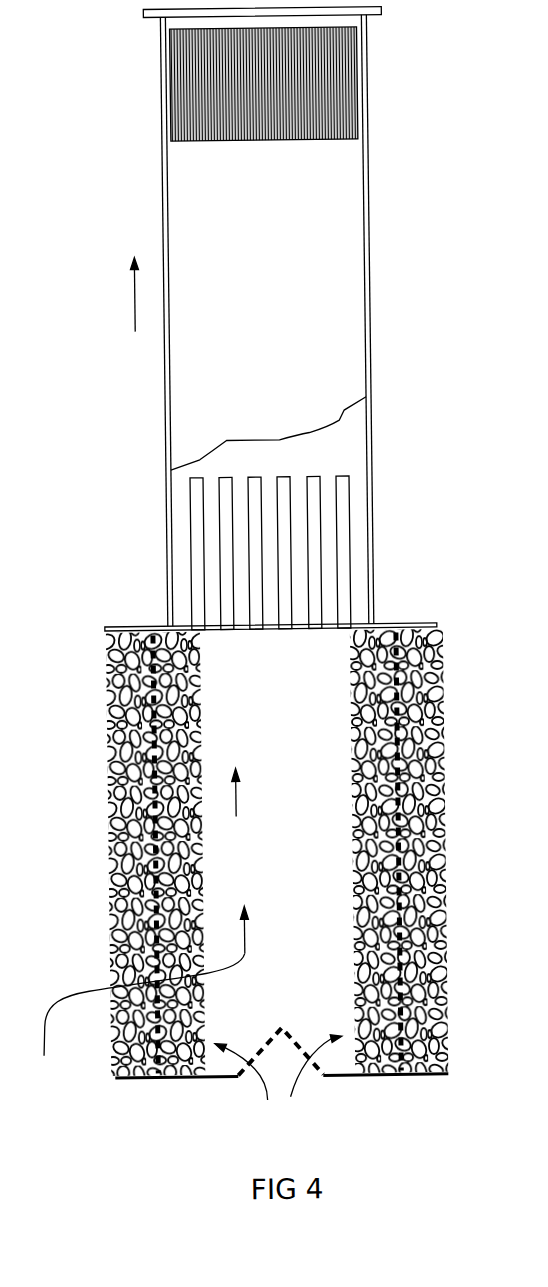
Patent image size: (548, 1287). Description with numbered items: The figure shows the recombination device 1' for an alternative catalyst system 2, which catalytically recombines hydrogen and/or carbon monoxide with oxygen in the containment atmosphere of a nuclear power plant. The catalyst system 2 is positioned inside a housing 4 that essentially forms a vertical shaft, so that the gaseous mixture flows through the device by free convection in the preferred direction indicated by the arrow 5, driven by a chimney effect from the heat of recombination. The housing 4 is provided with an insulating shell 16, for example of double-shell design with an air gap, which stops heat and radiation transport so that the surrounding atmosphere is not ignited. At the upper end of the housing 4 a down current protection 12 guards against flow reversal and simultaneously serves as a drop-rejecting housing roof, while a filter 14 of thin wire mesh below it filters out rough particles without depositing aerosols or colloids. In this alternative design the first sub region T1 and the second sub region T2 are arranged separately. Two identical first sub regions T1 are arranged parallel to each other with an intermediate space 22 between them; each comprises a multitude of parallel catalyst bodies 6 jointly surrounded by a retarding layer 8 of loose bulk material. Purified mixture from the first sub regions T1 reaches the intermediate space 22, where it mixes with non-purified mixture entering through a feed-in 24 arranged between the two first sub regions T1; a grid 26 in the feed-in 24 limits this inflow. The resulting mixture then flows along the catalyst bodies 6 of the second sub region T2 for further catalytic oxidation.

The recombination device 1' is at (37, 374).
The catalyst system 2 is at (150, 527).
The housing 4 is at (375, 253).
The arrow 5 is at (139, 291).
The catalyst bodies 6 is at (162, 663).
The retarding layer 8 is at (34, 920).
The down current protection 12 is at (151, 12).
The filter 14 is at (197, 77).
The insulating shell 16 is at (171, 186).
The intermediate space 22 is at (168, 980).
The feed-in 24 is at (272, 1075).
The grid 26 is at (286, 1035).
The first sub region T1 is at (486, 849).
The second sub region T2 is at (418, 564).